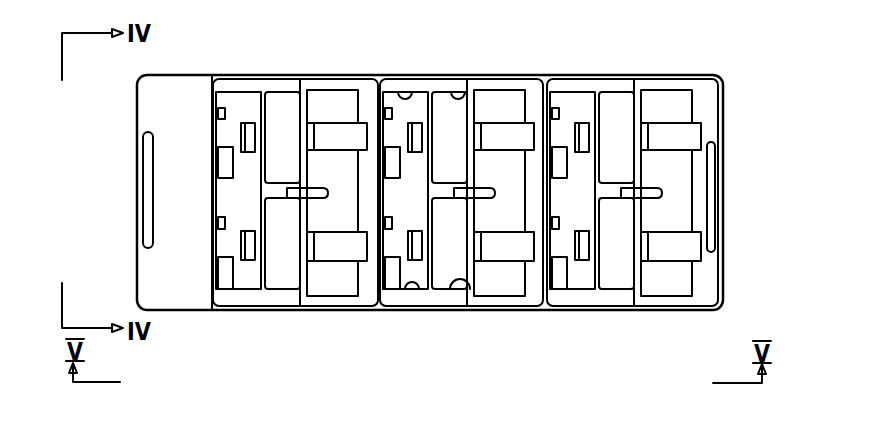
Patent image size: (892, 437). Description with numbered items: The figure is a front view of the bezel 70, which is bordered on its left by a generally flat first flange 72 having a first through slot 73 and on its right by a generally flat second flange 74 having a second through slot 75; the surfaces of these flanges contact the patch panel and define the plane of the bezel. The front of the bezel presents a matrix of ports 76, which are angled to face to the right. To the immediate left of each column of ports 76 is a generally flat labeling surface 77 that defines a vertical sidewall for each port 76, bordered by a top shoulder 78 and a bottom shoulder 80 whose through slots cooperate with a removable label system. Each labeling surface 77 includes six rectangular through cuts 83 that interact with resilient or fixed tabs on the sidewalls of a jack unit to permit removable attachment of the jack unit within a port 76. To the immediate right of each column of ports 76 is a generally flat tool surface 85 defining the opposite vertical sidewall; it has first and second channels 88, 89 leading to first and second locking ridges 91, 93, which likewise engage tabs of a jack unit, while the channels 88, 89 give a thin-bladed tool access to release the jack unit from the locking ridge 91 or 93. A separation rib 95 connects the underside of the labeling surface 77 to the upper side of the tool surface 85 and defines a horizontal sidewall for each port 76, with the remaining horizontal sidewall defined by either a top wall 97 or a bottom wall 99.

The bezel 70 is at (712, 52).
The first flange 72 is at (194, 199).
The first through slot 73 is at (147, 207).
The second flange 74 is at (710, 107).
The second through slot 75 is at (710, 200).
The port 76 is at (297, 151).
The labeling surface 77 is at (254, 216).
The top shoulder 78 is at (406, 95).
The bottom shoulder 80 is at (418, 292).
The rectangular through cuts 83 is at (581, 128).
The tool surface 85 is at (349, 229).
The first channel 88 is at (335, 125).
The second channel 89 is at (343, 255).
The first locking ridge 91 is at (332, 138).
The second locking ridge 93 is at (322, 255).
The separation rib 95 is at (292, 192).
The top wall 97 is at (462, 97).
The bottom wall 99 is at (470, 285).